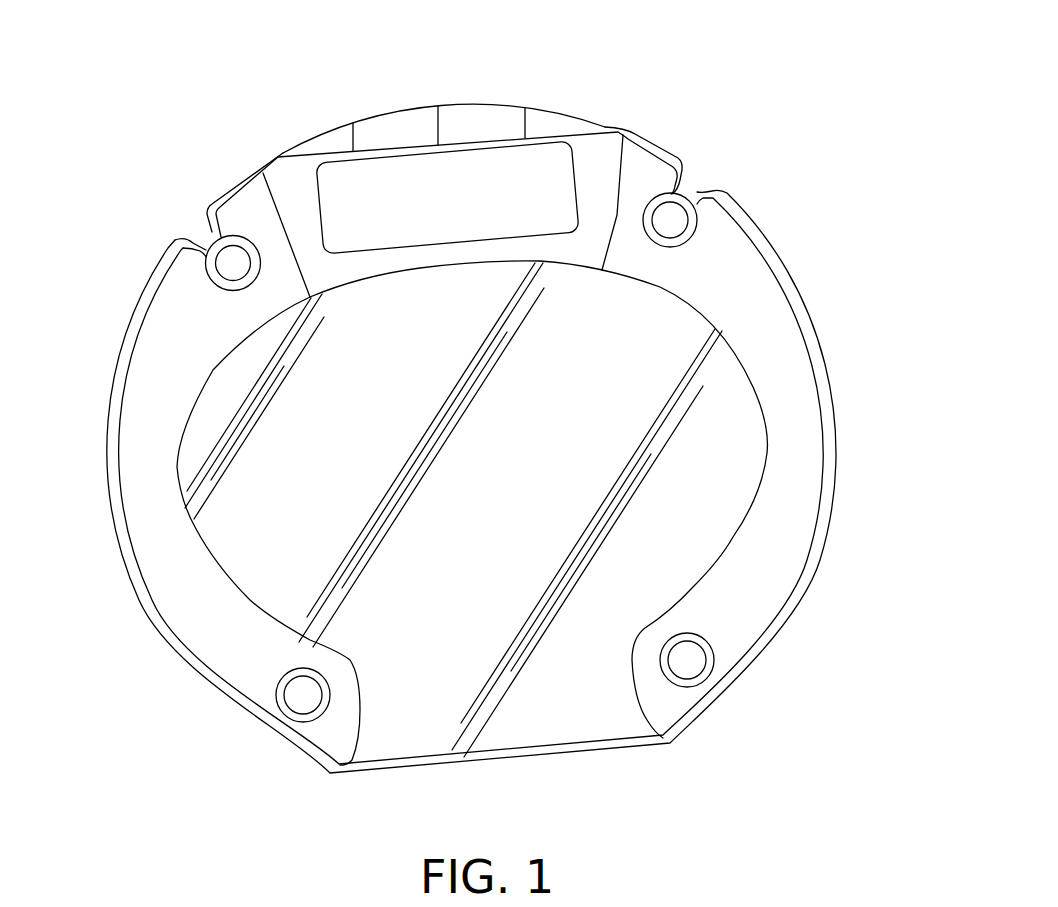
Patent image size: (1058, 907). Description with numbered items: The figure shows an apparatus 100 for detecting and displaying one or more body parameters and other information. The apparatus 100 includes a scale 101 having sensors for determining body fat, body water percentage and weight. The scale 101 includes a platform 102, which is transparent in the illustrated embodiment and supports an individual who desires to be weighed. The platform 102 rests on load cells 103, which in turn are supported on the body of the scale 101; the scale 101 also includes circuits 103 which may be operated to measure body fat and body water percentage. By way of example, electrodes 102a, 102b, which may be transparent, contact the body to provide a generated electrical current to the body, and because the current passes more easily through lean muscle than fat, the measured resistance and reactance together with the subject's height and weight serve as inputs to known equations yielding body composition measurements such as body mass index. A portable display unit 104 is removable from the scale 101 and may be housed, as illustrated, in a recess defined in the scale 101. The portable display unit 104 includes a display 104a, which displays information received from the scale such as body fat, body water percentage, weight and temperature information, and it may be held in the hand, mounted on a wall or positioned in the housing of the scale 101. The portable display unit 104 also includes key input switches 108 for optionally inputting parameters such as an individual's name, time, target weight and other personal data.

The apparatus 100 is at (705, 100).
The scale 101 is at (778, 238).
The platform 102 is at (795, 368).
The electrode 102a is at (684, 477).
The electrode 102b is at (240, 540).
The load cells 103 is at (222, 262).
The portable display unit 104 is at (600, 170).
The display 104a is at (413, 182).
The key input switches 108 is at (383, 120).